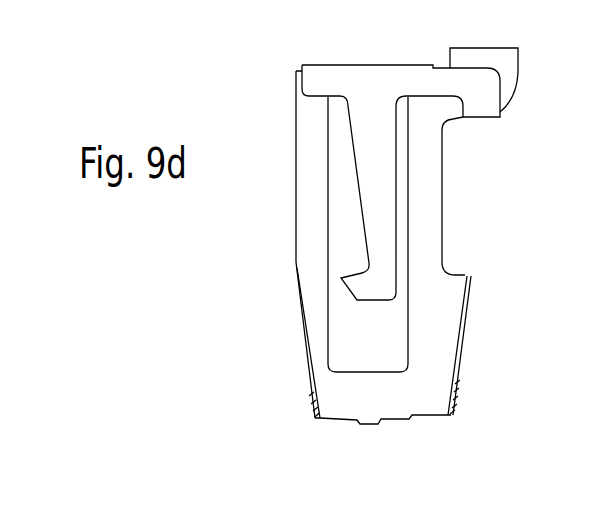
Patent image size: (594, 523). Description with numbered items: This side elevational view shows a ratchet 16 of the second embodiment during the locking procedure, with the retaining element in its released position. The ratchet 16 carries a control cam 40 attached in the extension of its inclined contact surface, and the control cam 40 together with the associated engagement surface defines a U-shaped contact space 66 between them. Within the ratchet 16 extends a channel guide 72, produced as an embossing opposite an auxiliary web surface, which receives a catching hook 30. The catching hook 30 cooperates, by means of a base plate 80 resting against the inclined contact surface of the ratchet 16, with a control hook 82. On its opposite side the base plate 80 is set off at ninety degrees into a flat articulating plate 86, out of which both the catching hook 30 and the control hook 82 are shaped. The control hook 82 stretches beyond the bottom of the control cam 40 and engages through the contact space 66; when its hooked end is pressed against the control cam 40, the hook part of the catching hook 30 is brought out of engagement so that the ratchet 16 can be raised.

The ratchet 16 is at (362, 247).
The catching hook 30 is at (377, 192).
The control cam 40 is at (503, 78).
The U-shaped contact space 66 is at (453, 245).
The channel guide 72 is at (348, 353).
The base plate 80 is at (380, 65).
The control hook 82 is at (471, 100).
The articulating plate 86 is at (323, 84).